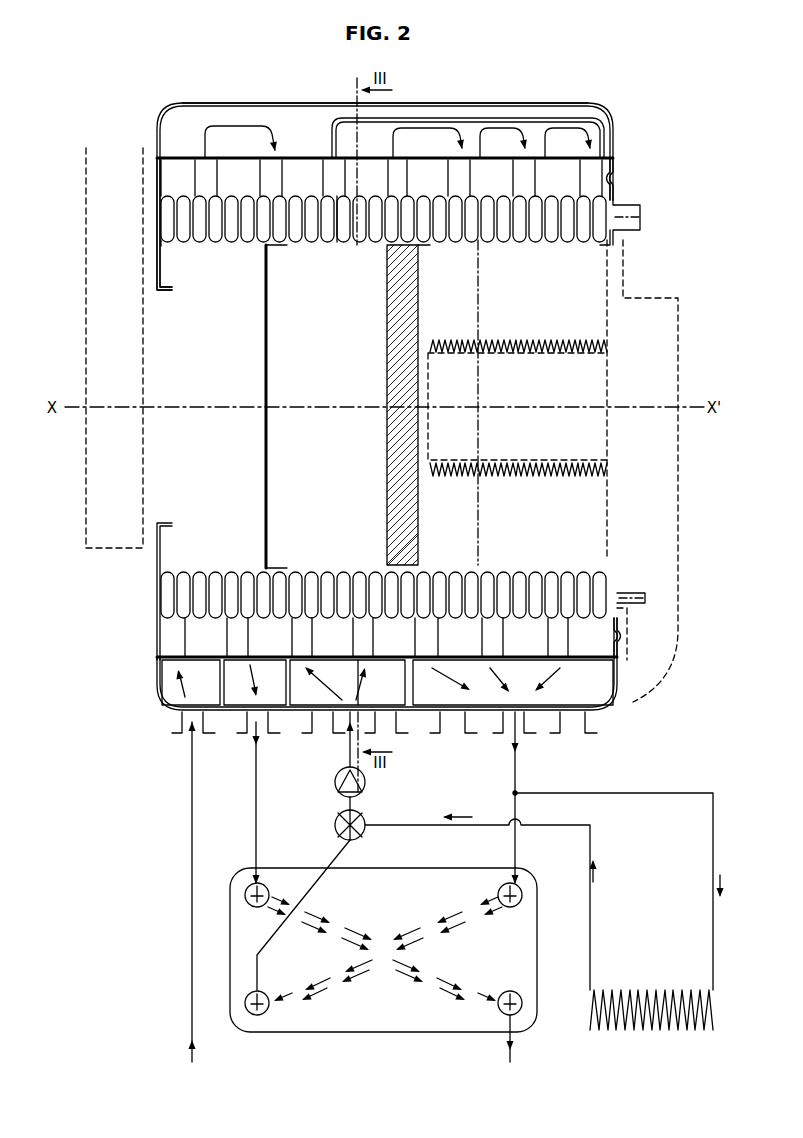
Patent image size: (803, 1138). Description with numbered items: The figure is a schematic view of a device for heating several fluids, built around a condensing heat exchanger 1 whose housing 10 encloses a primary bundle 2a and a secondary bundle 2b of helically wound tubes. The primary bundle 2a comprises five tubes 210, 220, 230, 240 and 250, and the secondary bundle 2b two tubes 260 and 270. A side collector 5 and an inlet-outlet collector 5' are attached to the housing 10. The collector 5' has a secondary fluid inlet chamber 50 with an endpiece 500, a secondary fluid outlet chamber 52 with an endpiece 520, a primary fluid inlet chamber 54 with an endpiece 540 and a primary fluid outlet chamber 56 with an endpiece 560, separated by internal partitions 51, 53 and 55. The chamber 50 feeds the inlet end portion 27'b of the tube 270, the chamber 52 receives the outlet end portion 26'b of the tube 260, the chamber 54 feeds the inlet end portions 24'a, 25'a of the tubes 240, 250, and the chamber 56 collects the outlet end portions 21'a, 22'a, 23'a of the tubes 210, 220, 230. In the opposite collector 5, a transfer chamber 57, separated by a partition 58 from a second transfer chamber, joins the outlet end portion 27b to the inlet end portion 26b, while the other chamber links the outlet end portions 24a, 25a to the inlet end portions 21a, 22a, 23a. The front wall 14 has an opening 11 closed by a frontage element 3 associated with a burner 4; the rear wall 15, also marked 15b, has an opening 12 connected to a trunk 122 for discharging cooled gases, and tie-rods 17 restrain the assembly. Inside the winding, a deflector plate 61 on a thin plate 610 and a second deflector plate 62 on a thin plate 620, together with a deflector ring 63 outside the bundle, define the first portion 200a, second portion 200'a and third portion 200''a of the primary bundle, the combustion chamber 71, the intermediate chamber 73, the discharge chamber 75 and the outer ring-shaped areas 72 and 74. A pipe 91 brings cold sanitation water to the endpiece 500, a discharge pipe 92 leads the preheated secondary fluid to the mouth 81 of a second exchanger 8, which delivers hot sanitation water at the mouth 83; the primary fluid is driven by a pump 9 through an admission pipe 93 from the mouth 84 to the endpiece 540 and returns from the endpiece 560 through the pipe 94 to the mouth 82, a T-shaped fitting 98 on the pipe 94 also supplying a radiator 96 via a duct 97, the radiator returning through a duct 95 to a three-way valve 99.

The condensing heat exchanger 1 is at (98, 802).
The primary bundle 2a is at (535, 250).
The secondary bundle 2b is at (166, 558).
The frontage element 3 is at (657, 298).
The burner 4 is at (525, 478).
The side collector 5 is at (367, 177).
The inlet-outlet collector 5' is at (629, 739).
The second exchanger 8 is at (390, 1032).
The pump 9 is at (366, 786).
The housing 10 is at (175, 693).
The opening 11 is at (600, 270).
The opening 12 is at (158, 347).
The front wall 14 is at (645, 228).
The rear wall 15 is at (157, 280).
The side wall 15b is at (158, 590).
The tie-rods 17 is at (642, 212).
The inlet end portion 21a is at (592, 177).
The outlet end portion 21'a is at (610, 626).
The inlet end portion 22a is at (520, 177).
The outlet end portion 22'a is at (568, 686).
The inlet end portion 23a is at (462, 177).
The outlet end portion 23'a is at (495, 685).
The outlet end portion 24a is at (402, 177).
The inlet end portion 24'a is at (425, 682).
The outlet end portion 25a is at (337, 243).
The inlet end portion 25'a is at (302, 730).
The inlet end portion 26b is at (272, 172).
The outlet end portion 26'b is at (172, 633).
The outlet end portion 27b is at (203, 172).
The inlet end portion 27'b is at (108, 640).
The secondary fluid inlet chamber 50 is at (170, 714).
The internal partition 51 is at (223, 713).
The secondary fluid outlet chamber 52 is at (240, 730).
The internal partition 53 is at (288, 714).
The primary fluid inlet chamber 54 is at (403, 722).
The internal partition 55 is at (502, 714).
The primary fluid outlet chamber 56 is at (588, 693).
The transfer chamber 57 is at (233, 110).
The partition 58 is at (250, 126).
The deflector plate 61 is at (400, 455).
The second deflector plate 62 is at (264, 465).
The deflector ring 63 is at (352, 243).
The combustion chamber 71 is at (523, 328).
The ring-shaped area 72 is at (481, 188).
The intermediate chamber 73 is at (321, 363).
The ring-shaped area 74 is at (228, 189).
The discharge chamber 75 is at (213, 388).
The mouth 81 is at (245, 893).
The mouth 82 is at (522, 893).
The mouth 83 is at (522, 1000).
The mouth 84 is at (245, 1000).
The pipe 91 is at (190, 905).
The discharge pipe 92 is at (255, 840).
The admission pipe 93 is at (337, 812).
The pipe 94 is at (512, 770).
The duct 95 is at (591, 905).
The radiator 96 is at (650, 992).
The duct 97 is at (672, 793).
The T-shaped fitting 98 is at (518, 790).
The three-way valve 99 is at (364, 835).
The trunk 122 is at (84, 232).
The first portion of the primary exchanger 200a is at (607, 566).
The second portion 200'a is at (368, 550).
The third portion 200''a is at (314, 550).
The helicoidal tube 210 is at (565, 250).
The helicoidal tube 220 is at (500, 250).
The helicoidal tube 230 is at (438, 250).
The helicoidal tube 240 is at (373, 250).
The helicoidal tube 250 is at (308, 250).
The helicoidal tube 260 is at (246, 250).
The helicoidal tube 270 is at (185, 250).
The endpiece 500 is at (182, 733).
The endpiece 520 is at (248, 718).
The endpiece 540 is at (335, 735).
The endpiece 560 is at (565, 715).
The thin plate 610 is at (423, 250).
The thin plate 620 is at (287, 247).